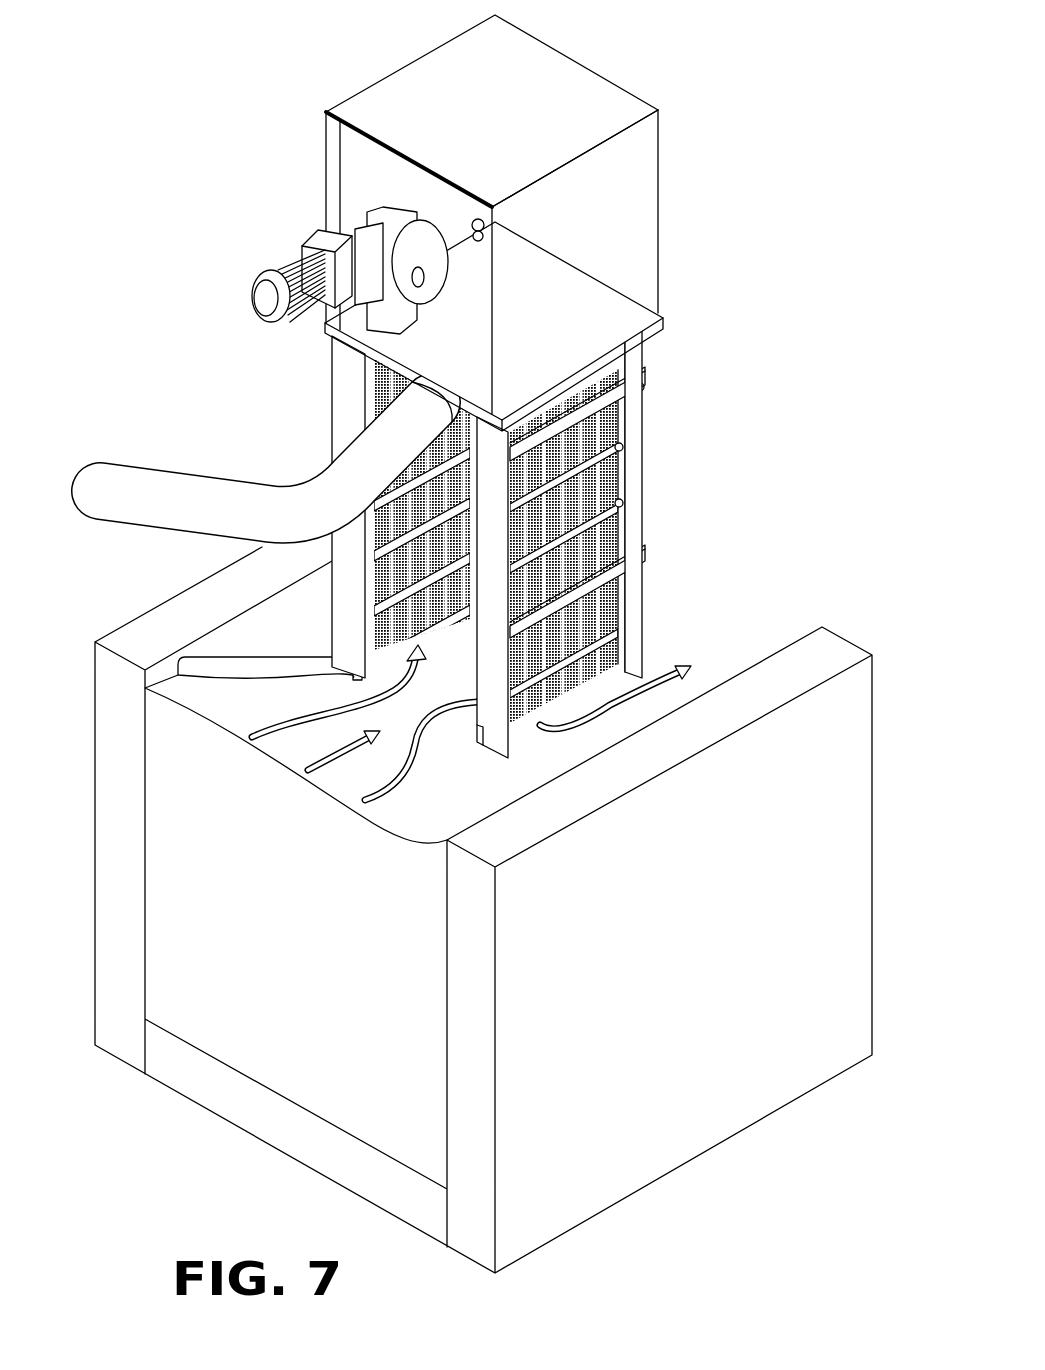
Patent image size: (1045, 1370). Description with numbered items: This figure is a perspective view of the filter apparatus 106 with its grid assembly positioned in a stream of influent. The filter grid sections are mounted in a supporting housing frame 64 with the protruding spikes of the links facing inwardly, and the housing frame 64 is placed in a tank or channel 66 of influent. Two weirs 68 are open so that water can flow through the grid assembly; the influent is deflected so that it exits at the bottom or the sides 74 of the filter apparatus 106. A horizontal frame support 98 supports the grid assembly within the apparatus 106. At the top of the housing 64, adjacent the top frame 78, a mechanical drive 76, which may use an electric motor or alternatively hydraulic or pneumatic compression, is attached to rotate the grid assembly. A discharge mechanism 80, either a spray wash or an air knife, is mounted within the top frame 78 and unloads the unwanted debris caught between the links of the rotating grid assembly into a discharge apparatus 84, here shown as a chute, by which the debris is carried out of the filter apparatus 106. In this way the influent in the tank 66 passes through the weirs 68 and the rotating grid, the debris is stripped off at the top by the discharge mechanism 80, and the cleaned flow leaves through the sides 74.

The tank or channel 66 is at (160, 1060).
The weir 68 is at (277, 657).
The supporting housing frame 64 is at (577, 539).
The sides 74 is at (617, 483).
The horizontal frame support 98 is at (632, 395).
The discharge apparatus 84 is at (170, 476).
The filter apparatus 106 is at (491, 223).
The top frame 78 is at (615, 113).
The discharge mechanism 80 is at (472, 236).
The mechanical drive 76 is at (283, 232).